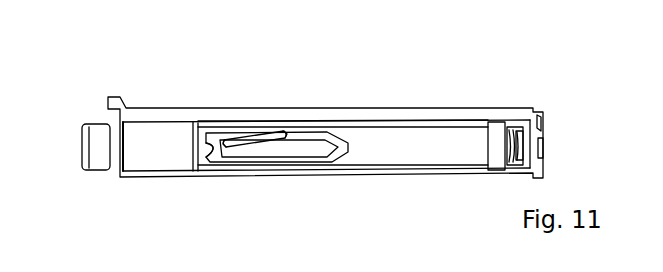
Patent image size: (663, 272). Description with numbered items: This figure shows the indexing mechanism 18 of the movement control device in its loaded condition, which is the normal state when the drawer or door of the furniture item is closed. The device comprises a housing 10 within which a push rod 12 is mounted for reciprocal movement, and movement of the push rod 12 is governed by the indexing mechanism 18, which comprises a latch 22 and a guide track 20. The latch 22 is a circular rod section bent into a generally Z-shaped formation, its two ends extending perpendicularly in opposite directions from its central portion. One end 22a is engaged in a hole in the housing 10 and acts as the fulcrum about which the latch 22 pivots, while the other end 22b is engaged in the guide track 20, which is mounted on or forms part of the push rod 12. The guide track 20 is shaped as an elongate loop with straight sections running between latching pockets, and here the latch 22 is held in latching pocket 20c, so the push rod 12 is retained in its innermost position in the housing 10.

The housing 10 is at (153, 101).
The push rod 12 is at (88, 101).
The indexing mechanism 18 is at (266, 111).
The guide track 20 is at (321, 177).
The latching pocket 20c is at (212, 145).
The latch 22 is at (255, 145).
The latch end 22a is at (285, 132).
The latch end 22b is at (227, 147).